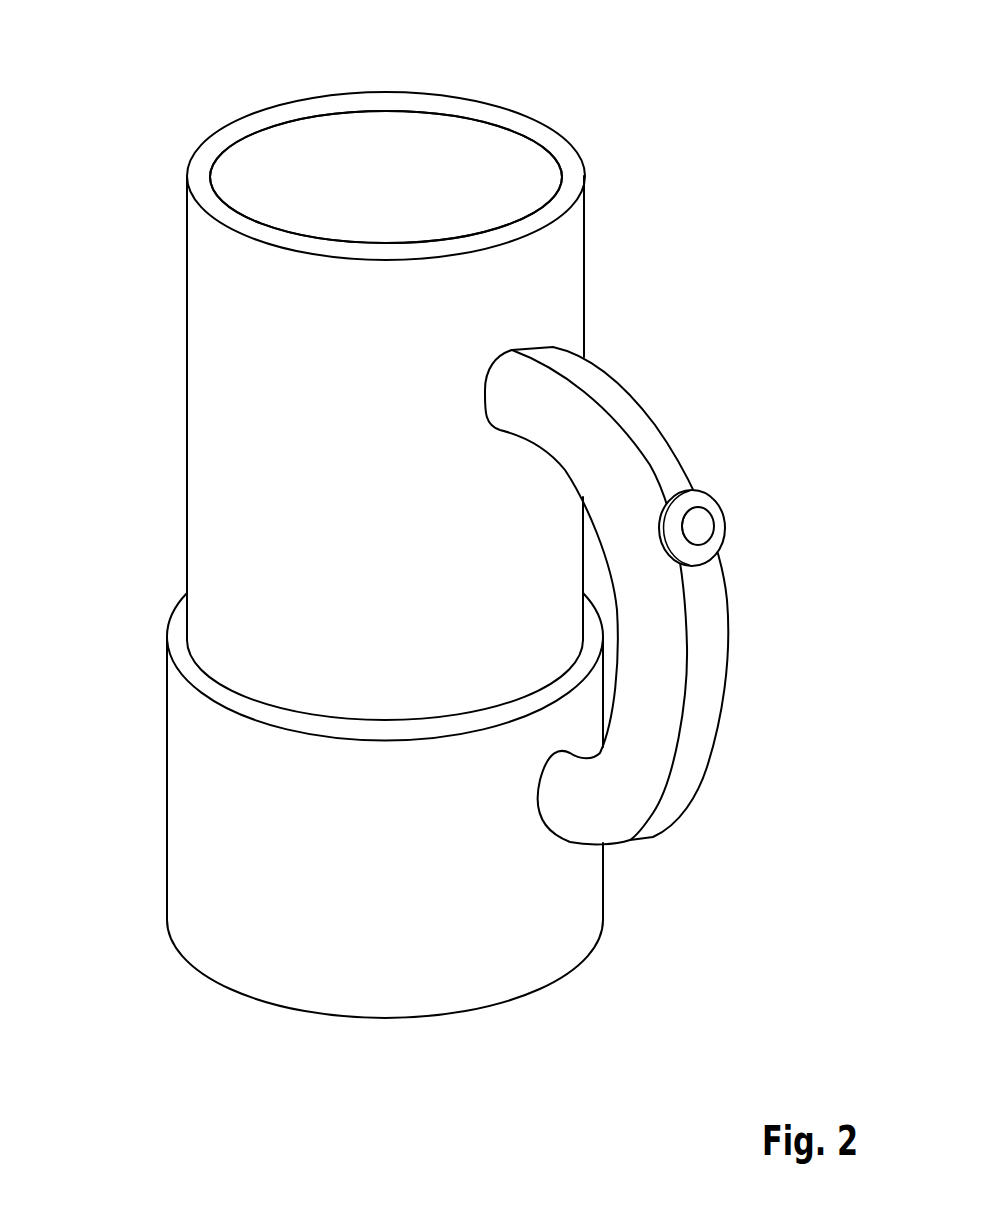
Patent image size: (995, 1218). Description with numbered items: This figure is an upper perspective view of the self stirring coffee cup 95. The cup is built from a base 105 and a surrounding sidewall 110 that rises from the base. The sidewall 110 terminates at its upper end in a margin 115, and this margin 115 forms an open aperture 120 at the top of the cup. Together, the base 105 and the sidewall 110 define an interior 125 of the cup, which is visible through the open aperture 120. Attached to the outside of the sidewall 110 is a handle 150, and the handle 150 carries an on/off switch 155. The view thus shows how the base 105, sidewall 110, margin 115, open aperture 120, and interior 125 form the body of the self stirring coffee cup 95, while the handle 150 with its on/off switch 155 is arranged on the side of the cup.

The self stirring coffee cup 95 is at (589, 66).
The base 105 is at (187, 813).
The surrounding sidewall 110 is at (261, 444).
The margin 115 is at (218, 143).
The open aperture 120 is at (314, 163).
The interior 125 is at (445, 208).
The handle 150 is at (675, 687).
The on/off switch 155 is at (698, 526).